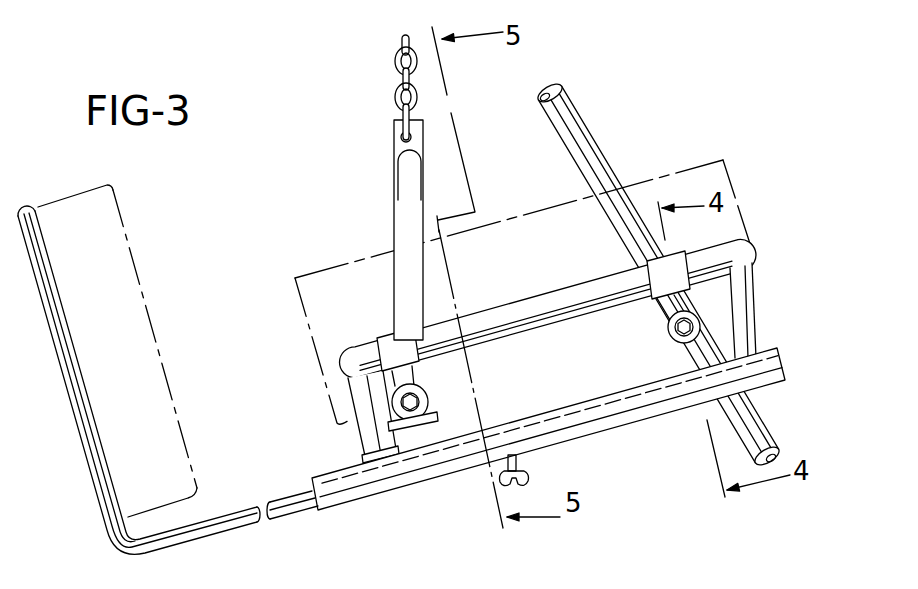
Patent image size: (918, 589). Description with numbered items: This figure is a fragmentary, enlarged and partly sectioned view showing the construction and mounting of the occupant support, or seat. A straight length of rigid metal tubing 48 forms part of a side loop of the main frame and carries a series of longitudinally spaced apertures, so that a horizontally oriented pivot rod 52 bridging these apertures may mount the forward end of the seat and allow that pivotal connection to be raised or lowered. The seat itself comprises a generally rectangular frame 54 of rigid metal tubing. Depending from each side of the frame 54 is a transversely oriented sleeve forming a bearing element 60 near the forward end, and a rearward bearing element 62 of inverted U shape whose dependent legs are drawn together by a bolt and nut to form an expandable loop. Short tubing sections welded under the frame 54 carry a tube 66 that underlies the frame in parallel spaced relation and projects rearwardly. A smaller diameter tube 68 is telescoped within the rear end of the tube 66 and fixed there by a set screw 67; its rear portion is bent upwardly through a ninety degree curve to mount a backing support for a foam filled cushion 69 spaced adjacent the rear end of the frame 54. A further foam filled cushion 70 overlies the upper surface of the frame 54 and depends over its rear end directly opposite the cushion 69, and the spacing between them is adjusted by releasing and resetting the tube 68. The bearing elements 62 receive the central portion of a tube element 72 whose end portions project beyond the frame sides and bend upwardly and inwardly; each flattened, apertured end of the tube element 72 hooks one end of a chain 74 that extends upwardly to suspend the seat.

The length of rigid metal tubing 48 is at (575, 98).
The pivot rod 52 is at (672, 342).
The rectangular frame 54 is at (745, 240).
The bearing element 60 is at (668, 320).
The bearing element 62 is at (432, 403).
The tube 66 is at (588, 407).
The set screw 67 is at (528, 468).
The smaller diameter tube 68 is at (283, 497).
The foam filled cushion 69 is at (128, 232).
The foam filled cushion 70 is at (347, 263).
The tube element 72 is at (395, 190).
The chain 74 is at (395, 94).